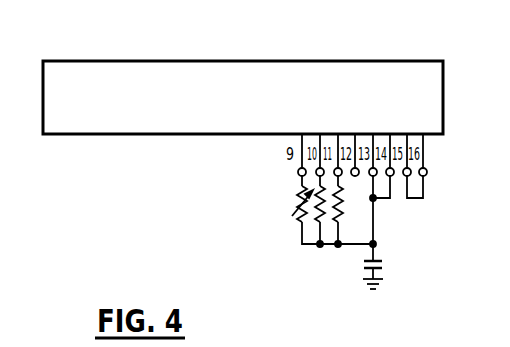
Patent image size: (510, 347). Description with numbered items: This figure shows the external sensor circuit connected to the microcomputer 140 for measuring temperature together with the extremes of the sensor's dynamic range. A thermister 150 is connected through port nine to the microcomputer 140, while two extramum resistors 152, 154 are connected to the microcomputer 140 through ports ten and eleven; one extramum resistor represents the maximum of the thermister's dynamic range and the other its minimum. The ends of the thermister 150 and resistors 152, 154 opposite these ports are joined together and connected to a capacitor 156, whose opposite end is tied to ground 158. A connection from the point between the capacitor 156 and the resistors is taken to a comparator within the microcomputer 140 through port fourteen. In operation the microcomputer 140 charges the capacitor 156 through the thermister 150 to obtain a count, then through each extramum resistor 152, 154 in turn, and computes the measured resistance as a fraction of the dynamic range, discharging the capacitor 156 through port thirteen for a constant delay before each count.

The microcomputer 140 is at (260, 61).
The thermister 150 is at (297, 195).
The extramum resistor 152 is at (322, 210).
The extramum resistor 154 is at (340, 206).
The capacitor 156 is at (364, 262).
The ground 158 is at (381, 283).